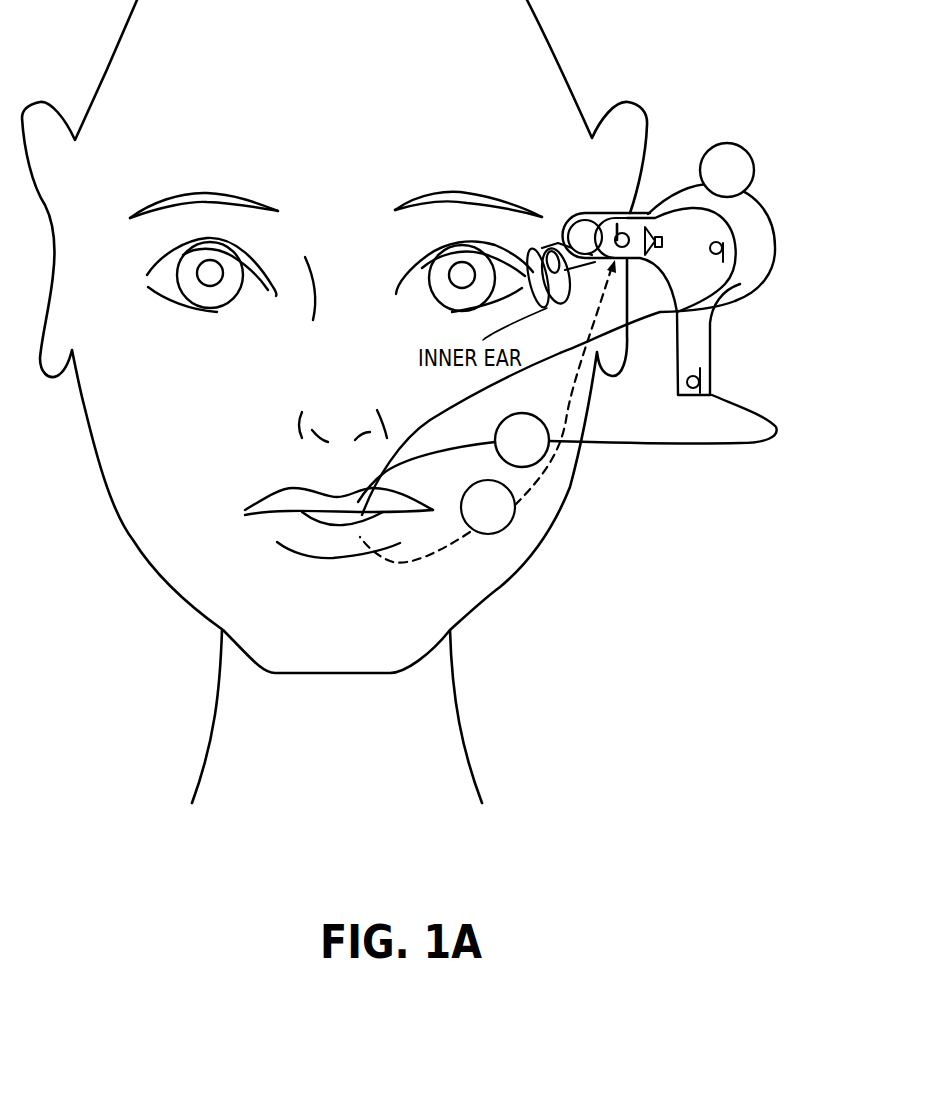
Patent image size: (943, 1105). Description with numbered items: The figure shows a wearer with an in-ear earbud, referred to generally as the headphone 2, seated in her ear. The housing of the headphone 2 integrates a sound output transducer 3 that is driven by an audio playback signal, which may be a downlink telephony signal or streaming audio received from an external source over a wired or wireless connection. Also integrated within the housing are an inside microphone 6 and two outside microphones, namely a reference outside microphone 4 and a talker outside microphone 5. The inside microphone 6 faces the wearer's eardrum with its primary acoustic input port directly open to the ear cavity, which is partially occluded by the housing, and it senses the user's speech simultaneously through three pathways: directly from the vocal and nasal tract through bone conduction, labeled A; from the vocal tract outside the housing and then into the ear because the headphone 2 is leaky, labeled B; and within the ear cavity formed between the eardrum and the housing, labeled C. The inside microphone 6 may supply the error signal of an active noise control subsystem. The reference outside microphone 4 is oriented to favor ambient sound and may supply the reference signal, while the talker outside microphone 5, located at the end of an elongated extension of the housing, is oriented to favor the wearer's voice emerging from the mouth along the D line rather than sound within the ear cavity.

The headphone 2 is at (680, 257).
The sound output transducer 3 is at (650, 225).
The reference outside microphone 4 is at (720, 247).
The talker outside microphone 5 is at (712, 389).
The inside microphone 6 is at (632, 218).
The bone conduction pathway A is at (488, 411).
The leakage pathway B is at (727, 170).
The ear cavity pathway C is at (585, 237).
The mouth-to-talker-microphone line D is at (567, 448).